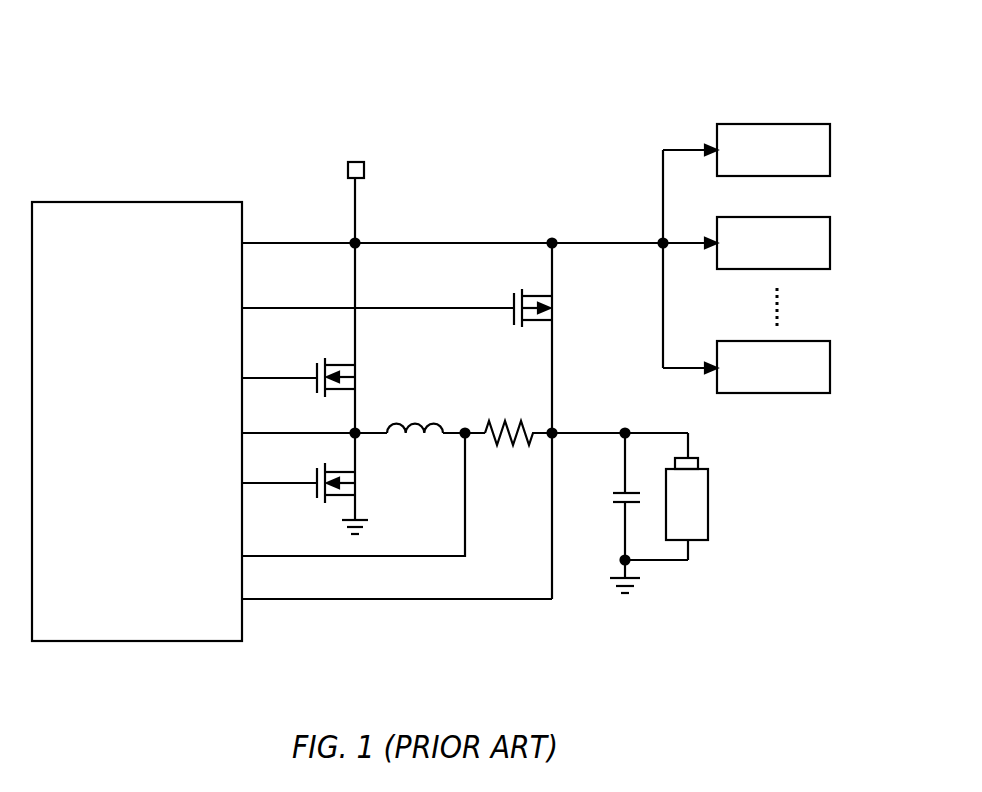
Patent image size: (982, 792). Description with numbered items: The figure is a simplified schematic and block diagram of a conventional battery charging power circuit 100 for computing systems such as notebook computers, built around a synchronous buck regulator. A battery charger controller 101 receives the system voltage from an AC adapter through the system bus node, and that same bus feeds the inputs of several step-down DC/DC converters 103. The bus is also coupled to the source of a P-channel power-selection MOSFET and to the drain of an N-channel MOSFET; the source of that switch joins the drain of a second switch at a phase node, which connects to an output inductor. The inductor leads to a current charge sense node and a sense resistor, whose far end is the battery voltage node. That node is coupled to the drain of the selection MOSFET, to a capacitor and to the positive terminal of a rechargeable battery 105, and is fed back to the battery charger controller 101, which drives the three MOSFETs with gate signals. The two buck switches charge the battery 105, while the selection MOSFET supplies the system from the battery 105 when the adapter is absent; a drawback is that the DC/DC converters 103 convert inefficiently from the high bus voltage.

The battery charging power circuit 100 is at (224, 52).
The battery charger controller 101 is at (158, 478).
The step-down DC/DC converters 103 is at (753, 76).
The rechargeable battery 105 is at (708, 520).